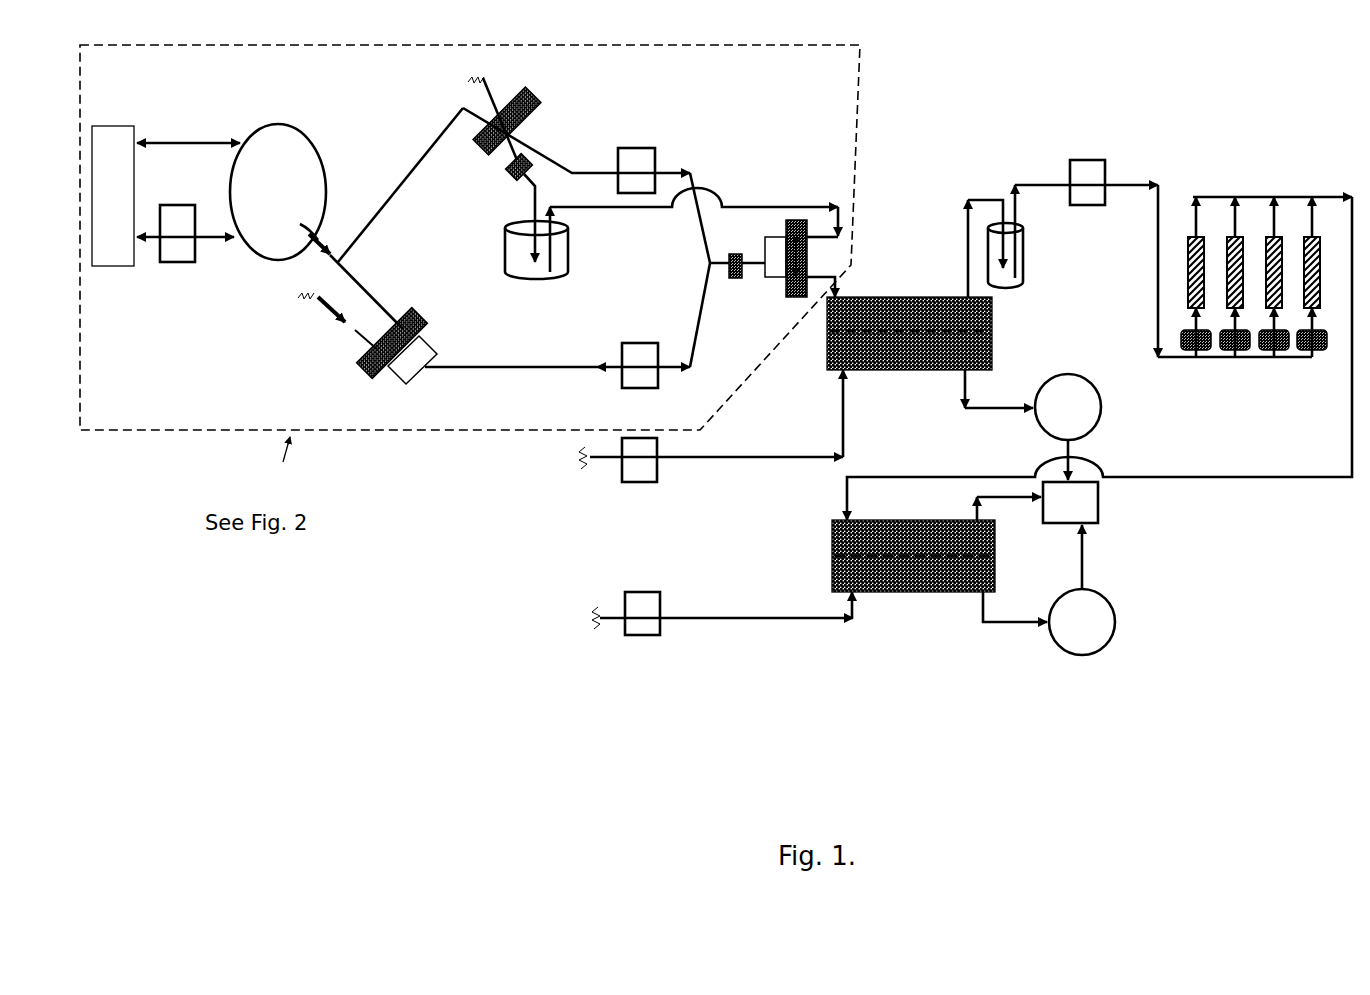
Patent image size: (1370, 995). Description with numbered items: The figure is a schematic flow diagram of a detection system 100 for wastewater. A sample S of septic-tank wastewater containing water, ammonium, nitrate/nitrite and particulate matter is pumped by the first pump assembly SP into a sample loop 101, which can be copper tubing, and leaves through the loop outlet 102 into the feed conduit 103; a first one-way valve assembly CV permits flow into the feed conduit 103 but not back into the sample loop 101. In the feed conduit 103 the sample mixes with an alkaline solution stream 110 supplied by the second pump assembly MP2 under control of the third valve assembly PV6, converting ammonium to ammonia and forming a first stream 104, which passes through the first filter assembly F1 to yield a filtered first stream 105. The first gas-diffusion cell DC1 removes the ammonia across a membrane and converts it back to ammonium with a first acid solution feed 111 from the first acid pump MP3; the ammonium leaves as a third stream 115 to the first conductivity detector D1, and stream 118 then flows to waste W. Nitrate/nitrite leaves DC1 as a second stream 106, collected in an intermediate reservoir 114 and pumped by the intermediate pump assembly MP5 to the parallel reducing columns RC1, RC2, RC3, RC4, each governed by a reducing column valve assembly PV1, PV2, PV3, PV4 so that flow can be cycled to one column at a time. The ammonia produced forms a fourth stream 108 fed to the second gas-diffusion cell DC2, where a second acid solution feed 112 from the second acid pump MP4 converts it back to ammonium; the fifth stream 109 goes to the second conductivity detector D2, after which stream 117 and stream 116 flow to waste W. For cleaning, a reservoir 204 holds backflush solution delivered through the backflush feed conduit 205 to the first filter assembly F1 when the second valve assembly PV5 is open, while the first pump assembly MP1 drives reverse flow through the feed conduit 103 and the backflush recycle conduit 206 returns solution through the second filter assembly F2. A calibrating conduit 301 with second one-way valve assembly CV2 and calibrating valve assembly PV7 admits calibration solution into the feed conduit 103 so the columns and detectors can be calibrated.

The detection system 100 is at (968, 72).
The sample loop 101 is at (296, 120).
The loop outlet 102 is at (299, 229).
The feed conduit 103 is at (383, 292).
The first stream 104 is at (718, 258).
The filtered first stream 105 is at (752, 258).
The second stream 106 is at (1128, 172).
The fourth stream 108 is at (1238, 193).
The fifth stream 109 is at (1017, 626).
The alkaline solution stream 110 is at (554, 130).
The first acid solution feed 111 is at (733, 469).
The second acid solution feed 112 is at (750, 628).
The intermediate reservoir 114 is at (1032, 285).
The third stream 115 is at (990, 415).
The stream to waste 116 is at (1021, 508).
The stream from D2 to waste 117 is at (1089, 566).
The stream from D1 to waste 118 is at (1076, 448).
The reservoir 204 is at (539, 284).
The backflush feed conduit 205 is at (628, 214).
The backflush recycle conduit 206 is at (386, 176).
The calibrating conduit 301 is at (415, 386).
The sample S is at (113, 196).
The first pump assembly SP is at (182, 272).
The first one-way valve assembly CV is at (337, 241).
The second one-way valve assembly CV2 is at (333, 333).
The third valve assembly PV6 is at (520, 113).
The calibrating valve assembly PV7 is at (389, 357).
The second filter assembly F2 is at (503, 182).
The first filter assembly F1 is at (738, 283).
The second valve assembly PV5 is at (789, 275).
The first pump assembly MP1 is at (640, 380).
The second pump assembly MP2 is at (636, 155).
The first acid pump MP3 is at (621, 473).
The second acid pump MP4 is at (628, 629).
The intermediate pump assembly MP5 is at (1087, 198).
The first gas-diffusion cell DC1 is at (909, 347).
The second gas-diffusion cell DC2 is at (913, 569).
The first conductivity detector D1 is at (1068, 407).
The second conductivity detector D2 is at (1082, 622).
The waste W is at (1070, 502).
The reducing column RC1 is at (1205, 232).
The reducing column RC2 is at (1245, 232).
The reducing column RC3 is at (1287, 232).
The reducing column RC4 is at (1325, 240).
The reducing column valve assembly PV1 is at (1191, 348).
The reducing column valve assembly PV2 is at (1232, 348).
The reducing column valve assembly PV3 is at (1274, 348).
The reducing column valve assembly PV4 is at (1316, 348).